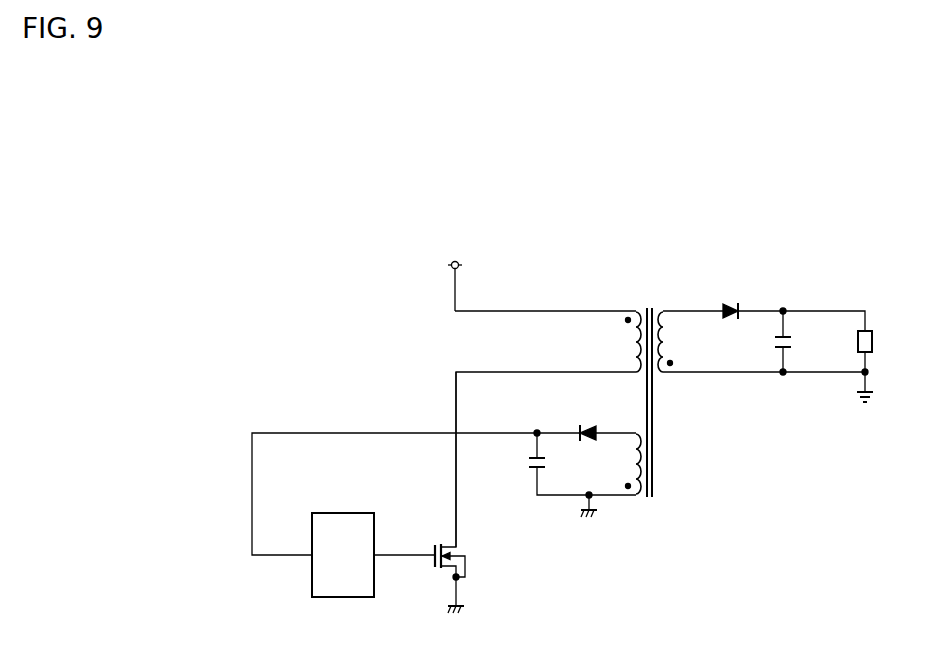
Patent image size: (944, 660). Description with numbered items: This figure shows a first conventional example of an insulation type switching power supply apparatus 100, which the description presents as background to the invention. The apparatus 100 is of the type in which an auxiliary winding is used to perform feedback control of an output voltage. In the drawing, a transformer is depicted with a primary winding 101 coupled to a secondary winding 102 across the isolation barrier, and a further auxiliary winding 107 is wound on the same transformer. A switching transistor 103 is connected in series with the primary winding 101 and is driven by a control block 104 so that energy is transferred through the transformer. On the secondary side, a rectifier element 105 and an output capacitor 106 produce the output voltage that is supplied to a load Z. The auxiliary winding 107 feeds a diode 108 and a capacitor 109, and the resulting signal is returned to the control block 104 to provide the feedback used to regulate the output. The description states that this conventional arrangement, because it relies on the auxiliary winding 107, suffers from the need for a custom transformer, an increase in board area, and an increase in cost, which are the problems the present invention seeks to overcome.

The switching power supply circuit 100 is at (260, 281).
The primary winding 101 is at (616, 342).
The secondary winding 102 is at (689, 342).
The switching transistor 103 is at (448, 492).
The control circuit 104 is at (341, 513).
The rectifier diode 105 is at (734, 304).
The output smoothing capacitor 106 is at (810, 341).
The auxiliary winding 107 is at (614, 464).
The diode 108 is at (587, 426).
The capacitor 109 is at (515, 465).
The load Z is at (880, 351).